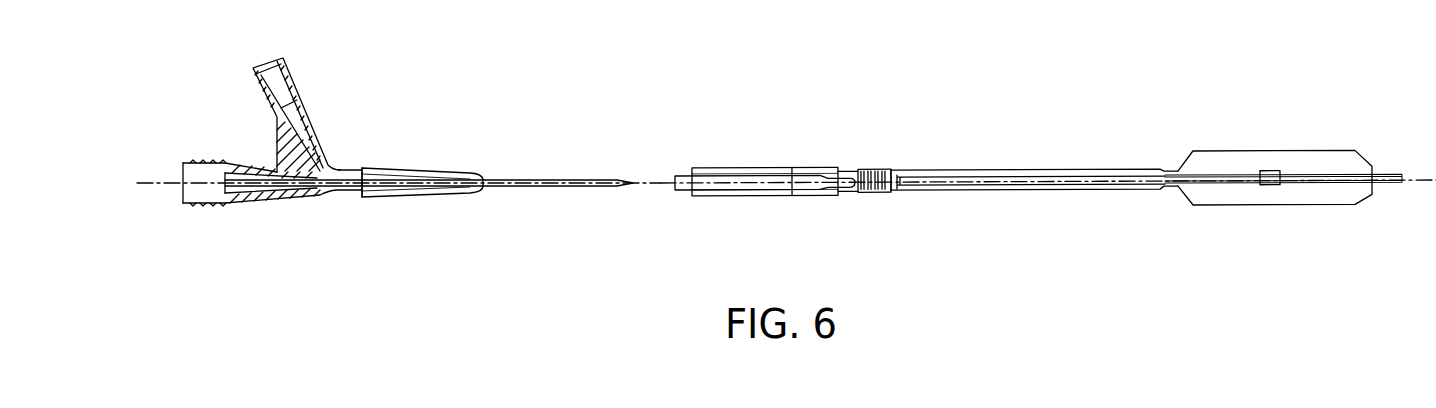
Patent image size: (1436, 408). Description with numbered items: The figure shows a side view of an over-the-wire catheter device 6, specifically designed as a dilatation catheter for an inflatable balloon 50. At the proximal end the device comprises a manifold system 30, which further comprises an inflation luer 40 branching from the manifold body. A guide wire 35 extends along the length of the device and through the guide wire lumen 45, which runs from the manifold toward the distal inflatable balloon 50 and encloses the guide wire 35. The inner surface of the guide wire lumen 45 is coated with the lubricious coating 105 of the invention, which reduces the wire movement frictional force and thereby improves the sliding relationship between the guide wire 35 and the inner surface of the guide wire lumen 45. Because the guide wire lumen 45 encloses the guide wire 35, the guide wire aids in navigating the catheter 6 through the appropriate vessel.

The over-the-wire catheter device 6 is at (770, 157).
The manifold system 30 is at (258, 197).
The guide wire 35 is at (140, 185).
The inflation luer 40 is at (318, 142).
The guide wire lumen 45 is at (943, 188).
The inflatable balloon 50 is at (1248, 207).
The lubricious coating 105 is at (1033, 177).